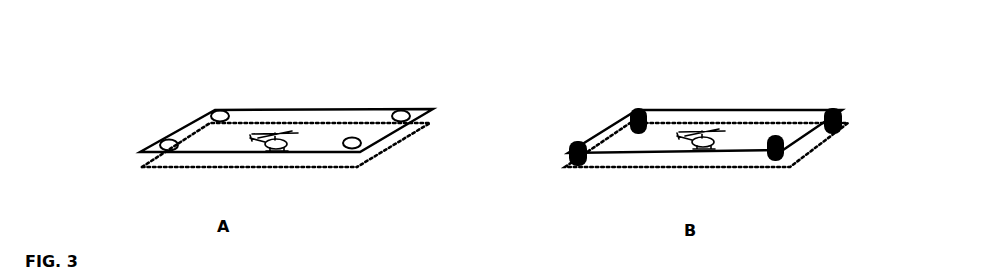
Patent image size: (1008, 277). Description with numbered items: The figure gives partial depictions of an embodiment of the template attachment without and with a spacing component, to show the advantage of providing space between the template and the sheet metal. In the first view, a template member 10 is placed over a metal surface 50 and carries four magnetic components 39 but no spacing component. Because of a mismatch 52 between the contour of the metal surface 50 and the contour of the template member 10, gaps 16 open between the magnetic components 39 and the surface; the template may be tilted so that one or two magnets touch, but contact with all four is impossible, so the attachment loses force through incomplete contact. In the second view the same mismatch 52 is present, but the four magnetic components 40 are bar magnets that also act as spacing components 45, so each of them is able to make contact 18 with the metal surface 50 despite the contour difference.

In FIG. 3A, the template member 10 is at (305, 108).
In FIG. 3B, the template member 10 is at (740, 108).
In FIG. 3A, the gaps 16 is at (208, 117).
In FIG. 3B, the contact 18 is at (647, 128).
In FIG. 3A, the magnetic components 39 is at (219, 112).
In FIG. 3B, the magnetic components 40 is at (640, 117).
In FIG. 3B, the spacing components 45 is at (633, 120).
In FIG. 3A, the metal surface 50 is at (272, 167).
In FIG. 3B, the metal surface 50 is at (665, 152).
In FIG. 3A, the mismatch 52 is at (292, 143).
In FIG. 3B, the mismatch 52 is at (718, 152).